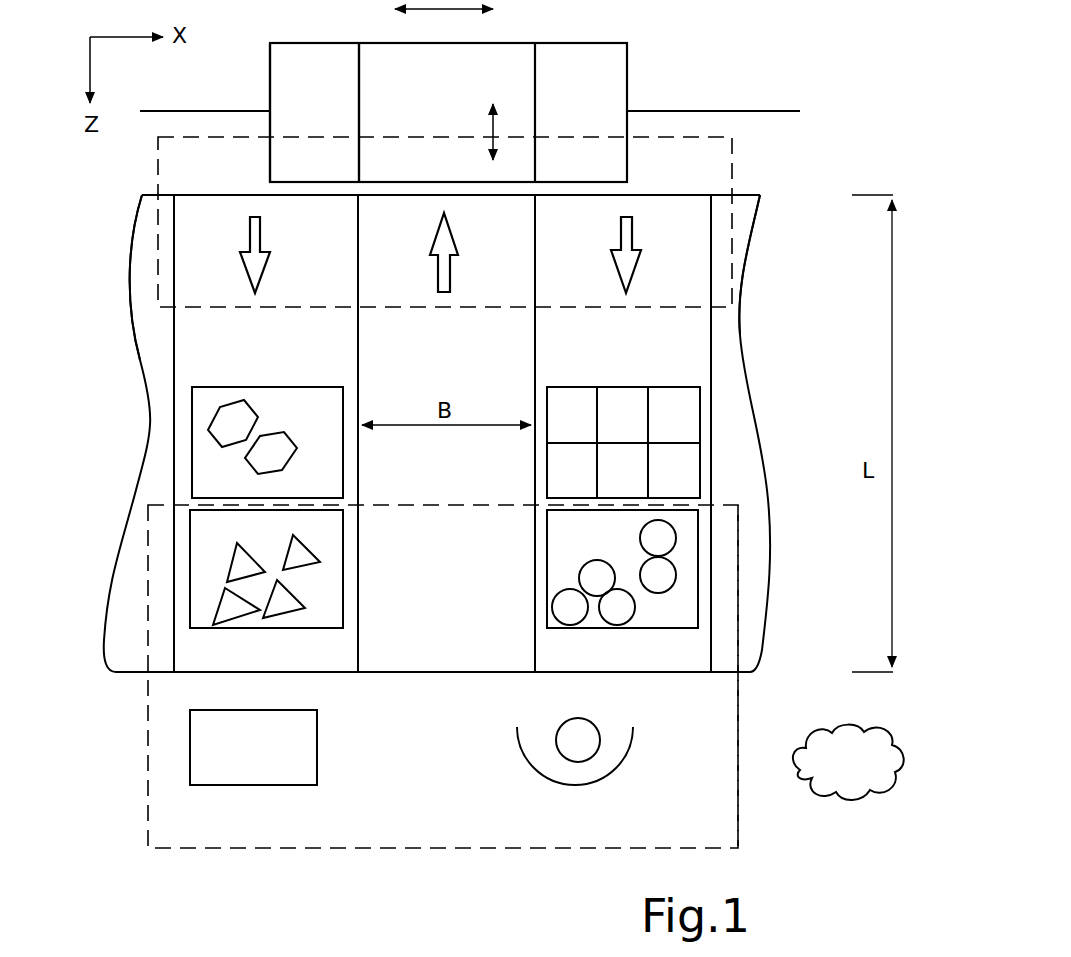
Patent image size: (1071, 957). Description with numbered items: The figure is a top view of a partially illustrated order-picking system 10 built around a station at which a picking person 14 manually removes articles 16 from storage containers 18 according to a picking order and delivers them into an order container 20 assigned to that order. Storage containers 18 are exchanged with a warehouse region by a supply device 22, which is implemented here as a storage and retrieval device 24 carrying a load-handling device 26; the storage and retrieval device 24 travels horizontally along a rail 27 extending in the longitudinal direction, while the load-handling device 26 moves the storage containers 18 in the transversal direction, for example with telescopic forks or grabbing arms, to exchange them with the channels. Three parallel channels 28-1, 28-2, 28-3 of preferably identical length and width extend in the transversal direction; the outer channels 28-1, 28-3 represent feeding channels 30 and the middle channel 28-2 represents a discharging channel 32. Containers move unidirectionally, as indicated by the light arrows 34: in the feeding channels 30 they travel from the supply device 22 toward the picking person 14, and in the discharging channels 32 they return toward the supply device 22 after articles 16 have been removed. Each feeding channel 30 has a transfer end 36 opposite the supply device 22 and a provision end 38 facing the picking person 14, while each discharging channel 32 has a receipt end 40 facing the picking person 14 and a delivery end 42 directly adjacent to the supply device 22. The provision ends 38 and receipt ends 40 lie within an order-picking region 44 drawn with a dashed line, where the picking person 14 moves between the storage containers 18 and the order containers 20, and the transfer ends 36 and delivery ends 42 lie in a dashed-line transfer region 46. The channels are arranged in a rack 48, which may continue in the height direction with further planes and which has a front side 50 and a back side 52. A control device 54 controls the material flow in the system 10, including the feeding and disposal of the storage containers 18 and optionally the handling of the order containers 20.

The order-picking system 10 is at (786, 271).
The picking person 14 is at (567, 786).
The articles 16 is at (687, 475).
The storage containers 18 is at (190, 427).
The order container 20 is at (249, 752).
The supply device 22 is at (644, 79).
The storage and retrieval device 24 is at (270, 92).
The load-handling device 26 is at (462, 127).
The rail 27 is at (755, 110).
The channel 28-1 is at (290, 352).
The channel 28-2 is at (480, 352).
The channel 28-3 is at (660, 352).
The feeding channels 30 is at (214, 652).
The discharging channels 32 is at (449, 628).
The light arrows 34 is at (261, 232).
The transfer end 36 is at (229, 192).
The provision end 38 is at (323, 675).
The receipt end 40 is at (439, 676).
The delivery end 42 is at (415, 192).
The order-picking region 44 is at (739, 703).
The transfer region 46 is at (746, 262).
The rack 48 is at (763, 400).
The front side 50 is at (122, 677).
The back side 52 is at (141, 191).
The control device 54 is at (868, 773).